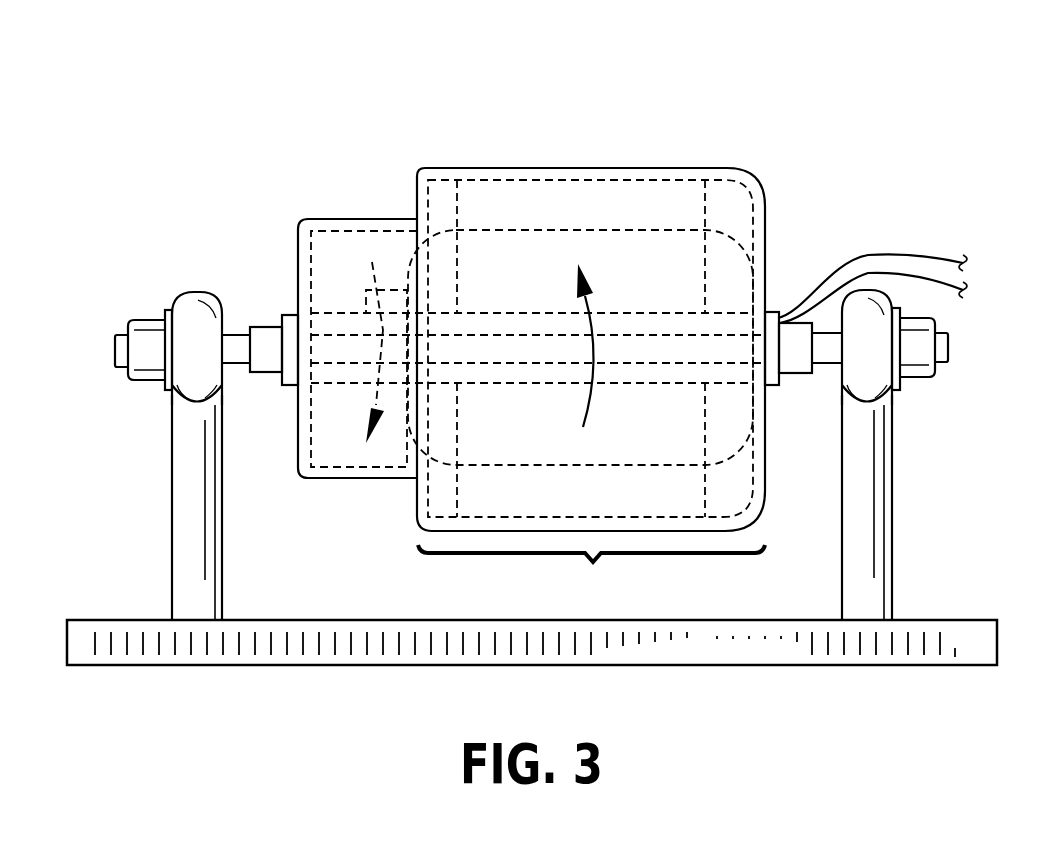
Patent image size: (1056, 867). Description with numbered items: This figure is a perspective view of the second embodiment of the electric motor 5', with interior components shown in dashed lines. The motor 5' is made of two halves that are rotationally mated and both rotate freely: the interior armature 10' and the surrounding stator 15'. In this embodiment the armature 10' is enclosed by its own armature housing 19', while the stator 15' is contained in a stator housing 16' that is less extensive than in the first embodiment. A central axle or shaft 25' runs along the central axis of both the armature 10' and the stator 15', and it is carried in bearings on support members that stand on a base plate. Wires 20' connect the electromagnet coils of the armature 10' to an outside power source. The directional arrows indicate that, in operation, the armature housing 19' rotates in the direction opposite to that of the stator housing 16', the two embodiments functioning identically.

The motor 5' is at (532, 345).
The armature 10' is at (537, 385).
The stator 15' is at (591, 314).
The stator housing 16' is at (591, 577).
The armature housing 19' is at (328, 320).
The wires 20' is at (914, 283).
The central axle or shaft 25' is at (206, 318).